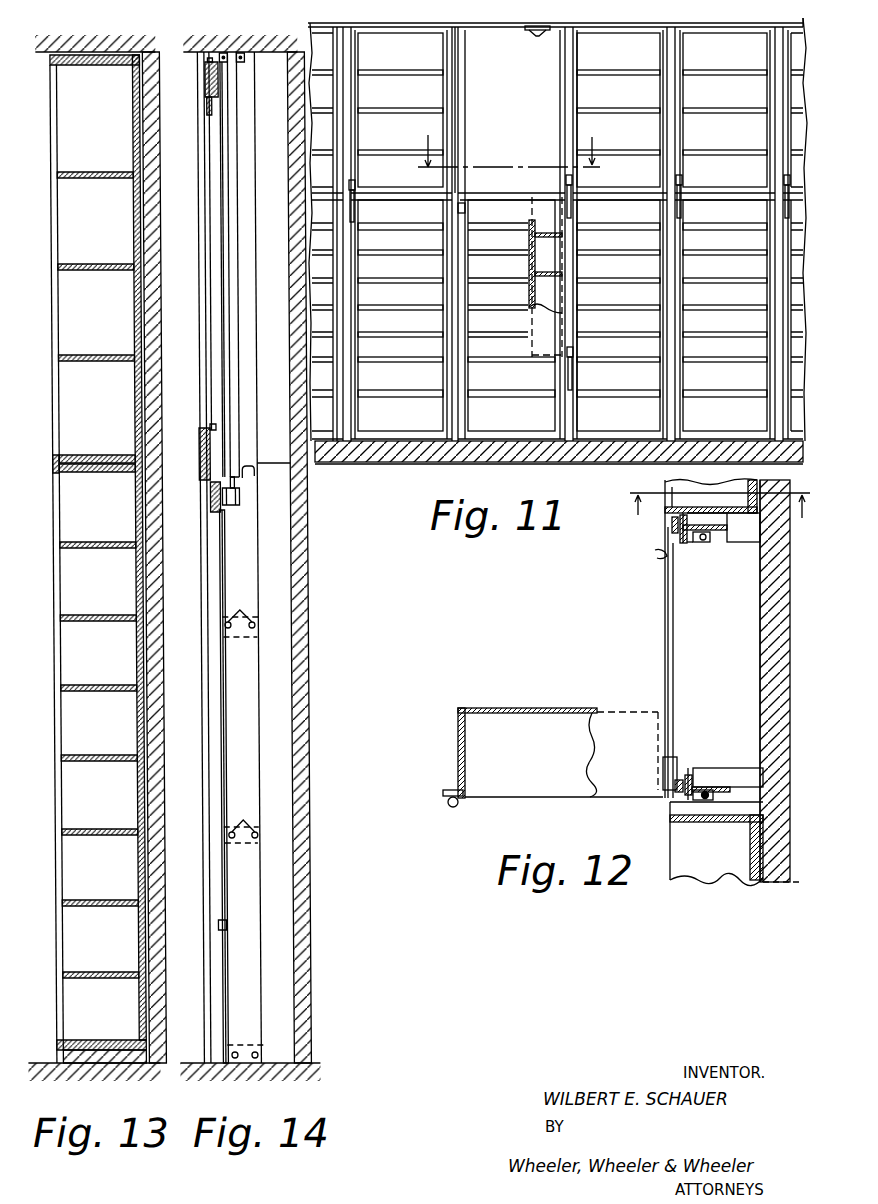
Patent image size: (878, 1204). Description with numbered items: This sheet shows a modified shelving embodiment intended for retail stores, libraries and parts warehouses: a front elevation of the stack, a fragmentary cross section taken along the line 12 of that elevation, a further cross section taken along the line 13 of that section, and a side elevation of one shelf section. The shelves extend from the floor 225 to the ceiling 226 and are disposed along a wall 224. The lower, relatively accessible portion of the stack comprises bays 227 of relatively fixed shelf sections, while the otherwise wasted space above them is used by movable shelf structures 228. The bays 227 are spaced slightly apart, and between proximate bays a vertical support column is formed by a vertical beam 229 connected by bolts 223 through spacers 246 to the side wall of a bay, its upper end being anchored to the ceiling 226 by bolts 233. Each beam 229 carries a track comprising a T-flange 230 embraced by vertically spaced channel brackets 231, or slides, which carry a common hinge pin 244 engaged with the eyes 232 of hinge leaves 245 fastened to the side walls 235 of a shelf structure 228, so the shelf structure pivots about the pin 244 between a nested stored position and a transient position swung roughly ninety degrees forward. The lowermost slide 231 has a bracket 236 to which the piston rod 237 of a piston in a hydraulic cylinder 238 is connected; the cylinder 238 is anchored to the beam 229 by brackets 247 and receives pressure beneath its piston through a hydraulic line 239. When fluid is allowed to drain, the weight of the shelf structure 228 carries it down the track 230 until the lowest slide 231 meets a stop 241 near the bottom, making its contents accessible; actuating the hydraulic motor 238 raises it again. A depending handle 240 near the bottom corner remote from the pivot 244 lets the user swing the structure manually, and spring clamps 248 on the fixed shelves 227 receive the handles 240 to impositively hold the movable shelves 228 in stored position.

In FIG. 13, the section line 12— 12 is at (42, 726).
In FIG. 11, the section line 12— 12 is at (513, 144).
In FIG. 12, the section line 13— 13 is at (715, 522).
In FIG. 14, the bolts 223 is at (245, 714).
In FIG. 13, the wall 224 is at (153, 725).
In FIG. 14, the wall 224 is at (304, 766).
In FIG. 12, the wall 224 is at (763, 656).
In FIG. 13, the floor 225 is at (36, 1068).
In FIG. 14, the floor 225 is at (192, 1066).
In FIG. 11, the floor 225 is at (370, 450).
In FIG. 13, the ceiling 226 is at (50, 57).
In FIG. 14, the ceiling 226 is at (195, 55).
In FIG. 11, the ceiling 226 is at (492, 20).
In FIG. 13, the bays of fixed shelf sections 227 is at (73, 735).
In FIG. 14, the bays of fixed shelf sections 227 is at (198, 803).
In FIG. 11, the bays of fixed shelf sections 227 is at (325, 297).
In FIG. 12, the bays of fixed shelf sections 227 is at (687, 660).
In FIG. 13, the movable shelf structure 228 is at (52, 290).
In FIG. 14, the movable shelf structure 228 is at (200, 270).
In FIG. 11, the movable shelf structure 228 is at (408, 92).
In FIG. 12, the movable shelf structure 228 is at (757, 481).
In FIG. 14, the vertical beam 229 is at (240, 737).
In FIG. 11, the vertical beam 229 is at (455, 110).
In FIG. 12, the vertical beam 229 is at (733, 542).
In FIG. 14, the T-flange track 230 is at (218, 534).
In FIG. 12, the T-flange track 230 is at (683, 543).
In FIG. 14, the channel brackets 231 is at (205, 81).
In FIG. 12, the channel brackets 231 is at (690, 544).
In FIG. 14, the eyes 232 is at (207, 128).
In FIG. 12, the eyes 232 is at (680, 775).
In FIG. 11, the bolts 233 is at (538, 36).
In FIG. 12, the side walls 235 is at (660, 749).
In FIG. 14, the bracket 236 is at (231, 489).
In FIG. 12, the bracket 236 is at (713, 795).
In FIG. 14, the piston rod 237 is at (240, 492).
In FIG. 14, the hydraulic cylinder 238 is at (233, 401).
In FIG. 12, the hydraulic cylinder 238 is at (707, 542).
In FIG. 14, the hydraulic line 239 is at (250, 472).
In FIG. 11, the handle 240 is at (356, 217).
In FIG. 12, the handle 240 is at (682, 515).
In FIG. 14, the stop 241 is at (221, 925).
In FIG. 14, the hinge pin 244 is at (208, 185).
In FIG. 12, the hinge pin 244 is at (672, 526).
In FIG. 14, the hinge leaves 245 is at (218, 138).
In FIG. 12, the hinge leaves 245 is at (668, 780).
In FIG. 14, the spacers 246 is at (236, 637).
In FIG. 12, the spacers 246 is at (715, 523).
In FIG. 14, the brackets 247 is at (246, 58).
In FIG. 11, the spring clamps 248 is at (356, 205).
In FIG. 12, the spring clamps 248 is at (657, 553).